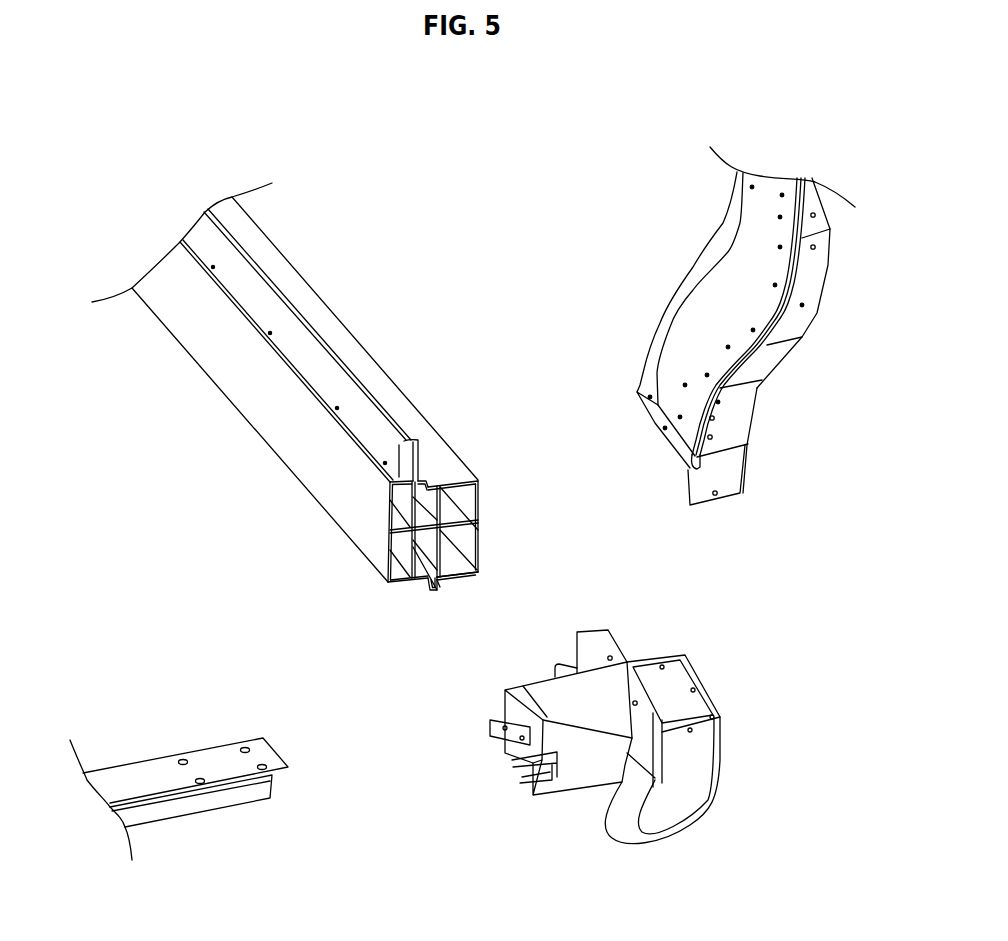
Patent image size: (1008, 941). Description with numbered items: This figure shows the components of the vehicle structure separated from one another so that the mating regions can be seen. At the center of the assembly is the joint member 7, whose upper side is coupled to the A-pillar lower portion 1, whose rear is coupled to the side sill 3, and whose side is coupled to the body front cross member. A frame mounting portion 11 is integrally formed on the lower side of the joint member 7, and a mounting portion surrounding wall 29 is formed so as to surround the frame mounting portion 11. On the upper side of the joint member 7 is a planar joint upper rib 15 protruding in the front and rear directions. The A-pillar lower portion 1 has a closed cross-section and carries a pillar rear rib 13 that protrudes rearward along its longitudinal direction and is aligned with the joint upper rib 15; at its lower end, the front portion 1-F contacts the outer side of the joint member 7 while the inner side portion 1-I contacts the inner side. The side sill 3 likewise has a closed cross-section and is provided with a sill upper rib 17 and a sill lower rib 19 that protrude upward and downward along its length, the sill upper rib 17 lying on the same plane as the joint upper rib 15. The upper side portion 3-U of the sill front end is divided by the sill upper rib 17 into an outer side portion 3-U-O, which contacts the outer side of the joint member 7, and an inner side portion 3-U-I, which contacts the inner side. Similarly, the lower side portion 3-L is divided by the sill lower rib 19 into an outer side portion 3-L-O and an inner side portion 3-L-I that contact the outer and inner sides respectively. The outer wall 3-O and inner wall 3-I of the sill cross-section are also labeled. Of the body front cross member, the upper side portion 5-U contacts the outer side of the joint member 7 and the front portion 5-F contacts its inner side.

The A-pillar lower portion 1 is at (770, 355).
The inner side portion 1-I is at (682, 452).
The front portion 1-F is at (738, 492).
The side sill 3 is at (298, 297).
The upper side portion 3-U is at (560, 370).
The inner side portion 3-U-I is at (403, 476).
The outer side portion 3-U-O is at (453, 475).
The outer wall of side sill 3-O is at (479, 510).
The inner wall of side sill 3-I is at (383, 532).
The lower side portion 3-L is at (480, 670).
The inner side portion 3-L-I is at (404, 579).
The outer side portion 3-L-O is at (467, 572).
The upper side portion 5-U is at (268, 757).
The front portion 5-F is at (268, 795).
The joint member 7 is at (677, 812).
The frame mounting portion 11 is at (517, 778).
The pillar rear rib 13 is at (687, 280).
The joint upper rib 15 is at (596, 647).
The sill upper rib 17 is at (318, 357).
The sill lower rib 19 is at (440, 575).
The mounting portion surrounding wall 29 is at (553, 783).